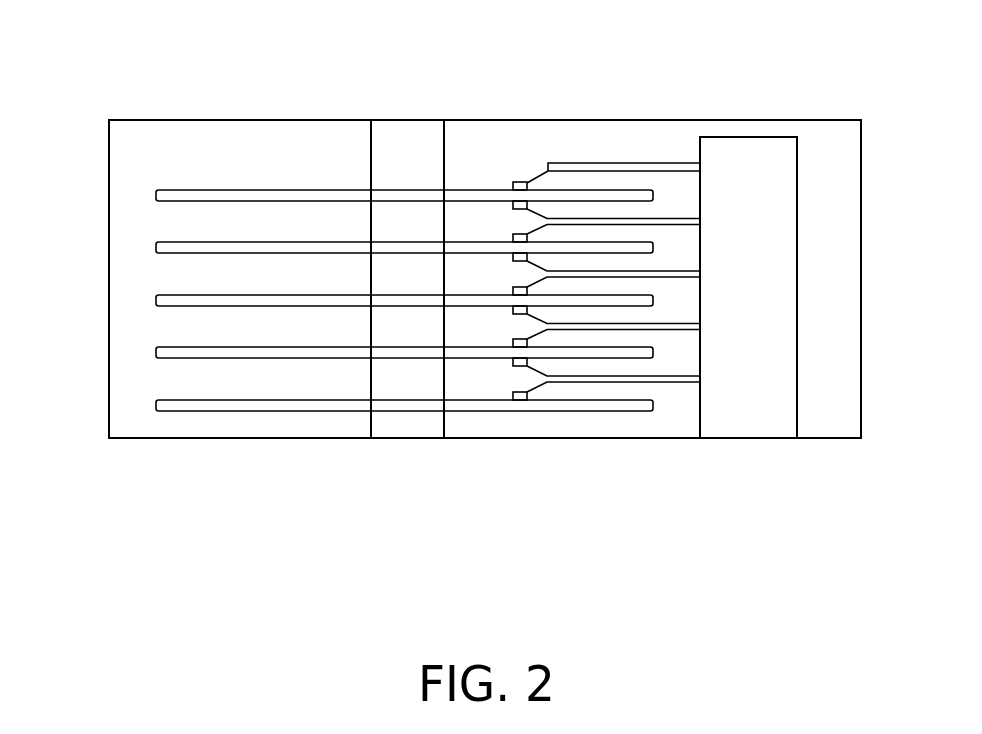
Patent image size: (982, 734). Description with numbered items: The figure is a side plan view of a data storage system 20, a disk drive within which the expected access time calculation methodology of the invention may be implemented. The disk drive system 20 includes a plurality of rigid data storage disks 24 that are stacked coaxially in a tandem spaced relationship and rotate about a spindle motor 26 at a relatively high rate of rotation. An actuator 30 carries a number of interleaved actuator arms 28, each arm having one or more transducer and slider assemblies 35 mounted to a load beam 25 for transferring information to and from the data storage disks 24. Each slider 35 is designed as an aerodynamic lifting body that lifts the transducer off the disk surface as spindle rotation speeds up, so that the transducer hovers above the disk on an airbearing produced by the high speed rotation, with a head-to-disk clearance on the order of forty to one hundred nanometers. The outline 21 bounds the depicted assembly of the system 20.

The data storage system 20 is at (756, 93).
The substrate 21 is at (861, 320).
The data storage disks 24 is at (156, 191).
The load beam 25 is at (541, 178).
The spindle motor 26 is at (400, 430).
The actuator arms 28 is at (603, 163).
The actuator 30 is at (747, 412).
The slider assemblies 35 is at (514, 182).